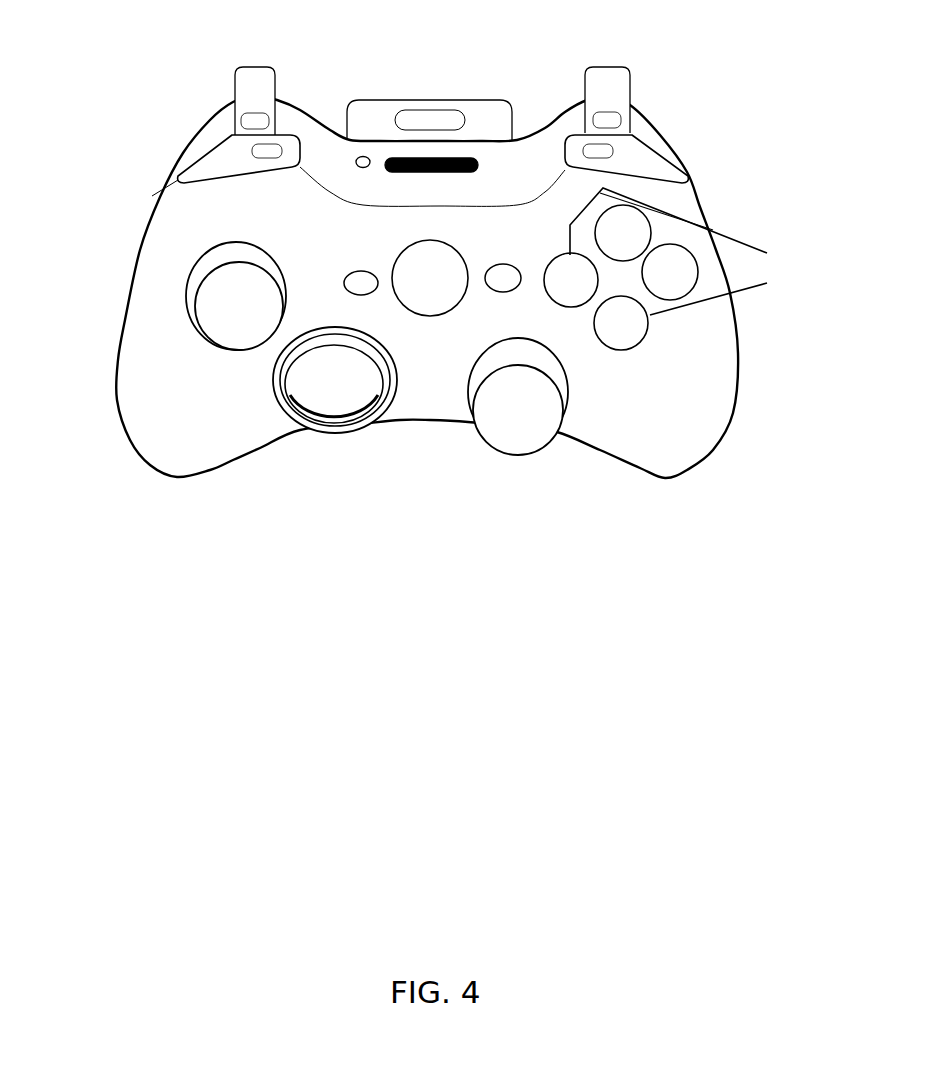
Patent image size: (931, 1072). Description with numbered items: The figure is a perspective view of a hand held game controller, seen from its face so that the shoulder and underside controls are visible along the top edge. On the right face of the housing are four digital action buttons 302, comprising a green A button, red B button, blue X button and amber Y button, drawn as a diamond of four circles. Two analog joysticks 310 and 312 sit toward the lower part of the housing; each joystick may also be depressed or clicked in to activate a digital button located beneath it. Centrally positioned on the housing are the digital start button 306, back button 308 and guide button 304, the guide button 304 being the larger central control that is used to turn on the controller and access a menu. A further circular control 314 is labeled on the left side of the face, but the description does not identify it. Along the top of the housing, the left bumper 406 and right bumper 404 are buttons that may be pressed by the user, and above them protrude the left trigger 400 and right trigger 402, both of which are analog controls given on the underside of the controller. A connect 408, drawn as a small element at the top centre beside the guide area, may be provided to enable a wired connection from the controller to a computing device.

The digital action buttons 302 is at (653, 238).
The guide button 304 is at (430, 242).
The start button 306 is at (502, 283).
The back button 308 is at (362, 282).
The analog joystick 310 is at (518, 456).
The analog joystick 312 is at (334, 433).
The left analog stick 314 is at (186, 311).
The left trigger 400 is at (251, 79).
The right trigger 402 is at (615, 77).
The right bumper 404 is at (633, 153).
The left bumper 406 is at (228, 153).
The connect 408 is at (363, 158).